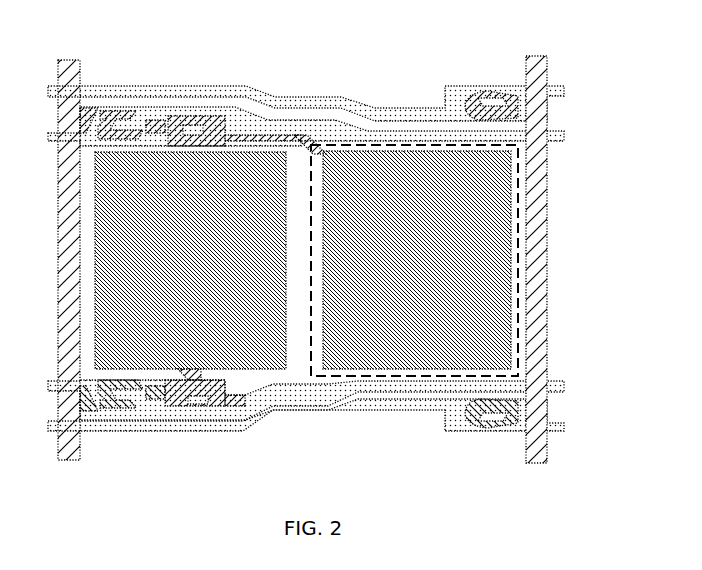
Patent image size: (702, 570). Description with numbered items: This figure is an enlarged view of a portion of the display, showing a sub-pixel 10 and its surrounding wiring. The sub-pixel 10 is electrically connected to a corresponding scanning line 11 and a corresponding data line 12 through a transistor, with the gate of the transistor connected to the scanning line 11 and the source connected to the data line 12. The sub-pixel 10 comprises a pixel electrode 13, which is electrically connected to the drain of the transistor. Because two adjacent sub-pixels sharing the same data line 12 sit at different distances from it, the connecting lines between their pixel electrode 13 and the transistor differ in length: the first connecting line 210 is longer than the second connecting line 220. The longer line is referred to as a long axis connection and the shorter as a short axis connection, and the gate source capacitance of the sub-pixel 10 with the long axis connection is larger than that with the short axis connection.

The sub-pixel 10 is at (514, 289).
The scanning line 11 is at (553, 127).
The data line 12 is at (548, 164).
The pixel electrode 13 is at (492, 248).
The first connecting line 210 is at (303, 137).
The second connecting line 220 is at (187, 366).